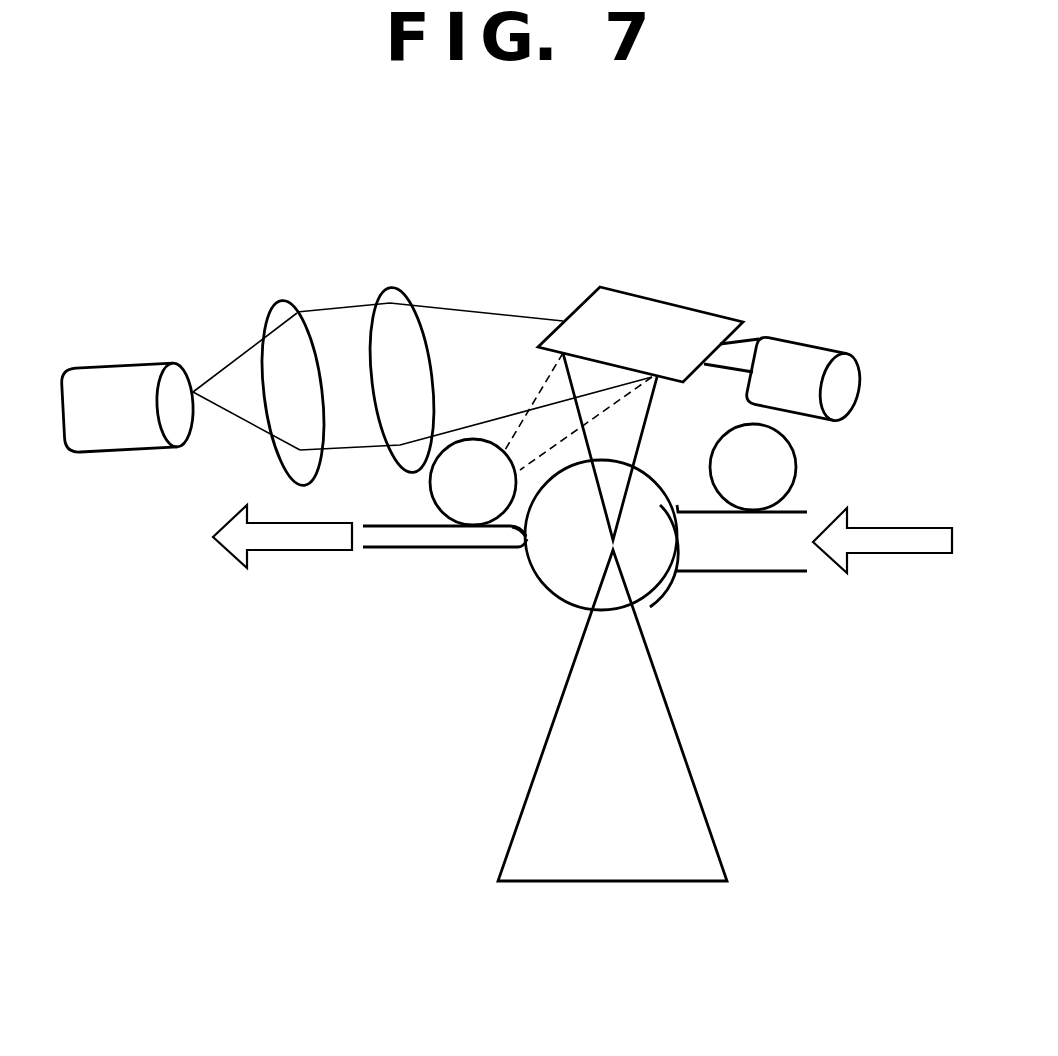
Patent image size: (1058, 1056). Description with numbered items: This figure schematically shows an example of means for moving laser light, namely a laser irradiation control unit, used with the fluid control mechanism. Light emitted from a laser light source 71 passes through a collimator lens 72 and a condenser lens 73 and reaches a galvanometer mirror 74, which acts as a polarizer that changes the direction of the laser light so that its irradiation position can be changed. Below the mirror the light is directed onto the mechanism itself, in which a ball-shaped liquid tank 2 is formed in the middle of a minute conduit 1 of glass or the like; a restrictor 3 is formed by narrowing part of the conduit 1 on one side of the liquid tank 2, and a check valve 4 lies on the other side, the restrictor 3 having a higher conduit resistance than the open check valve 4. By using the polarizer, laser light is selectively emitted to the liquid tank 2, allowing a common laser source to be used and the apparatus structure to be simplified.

The conduit 1 is at (400, 550).
The liquid tank 2 is at (567, 597).
The restrictor 3 is at (525, 547).
The check valve 4 is at (677, 540).
The laser light source 71 is at (120, 377).
The collimator lens 72 is at (283, 310).
The condenser lens 73 is at (390, 290).
The galvanometer mirror 74 is at (665, 308).